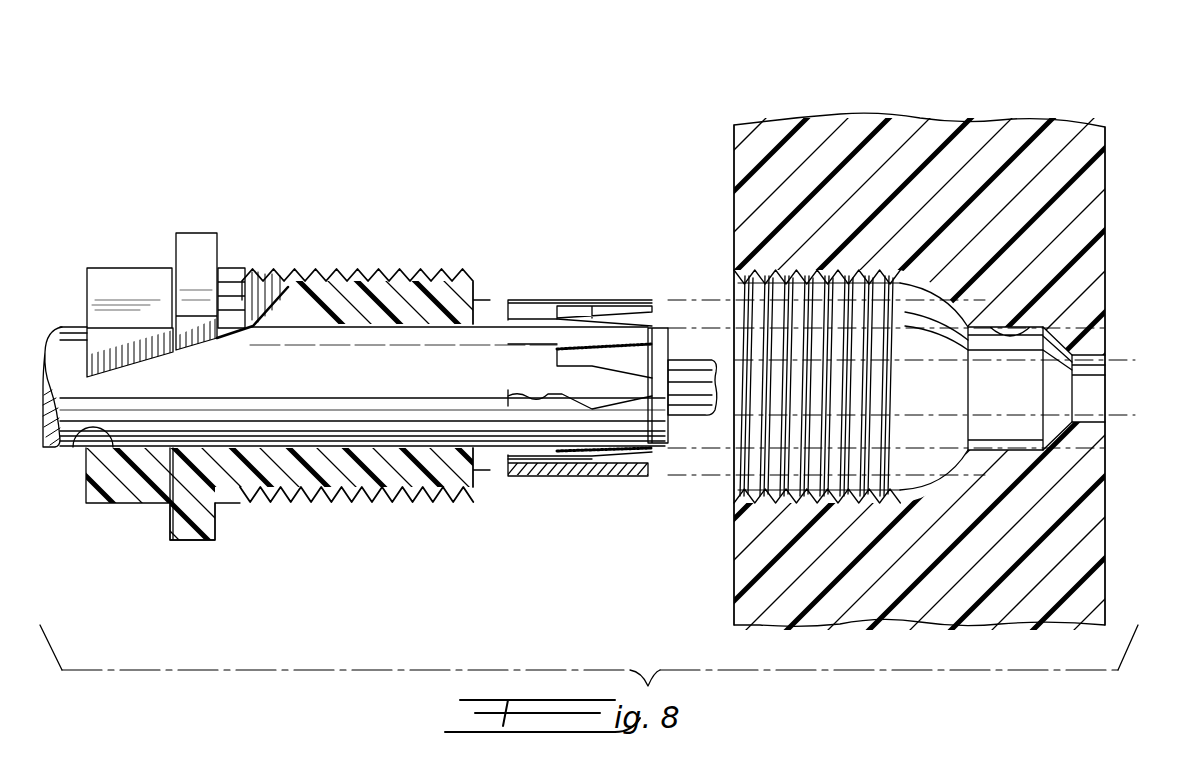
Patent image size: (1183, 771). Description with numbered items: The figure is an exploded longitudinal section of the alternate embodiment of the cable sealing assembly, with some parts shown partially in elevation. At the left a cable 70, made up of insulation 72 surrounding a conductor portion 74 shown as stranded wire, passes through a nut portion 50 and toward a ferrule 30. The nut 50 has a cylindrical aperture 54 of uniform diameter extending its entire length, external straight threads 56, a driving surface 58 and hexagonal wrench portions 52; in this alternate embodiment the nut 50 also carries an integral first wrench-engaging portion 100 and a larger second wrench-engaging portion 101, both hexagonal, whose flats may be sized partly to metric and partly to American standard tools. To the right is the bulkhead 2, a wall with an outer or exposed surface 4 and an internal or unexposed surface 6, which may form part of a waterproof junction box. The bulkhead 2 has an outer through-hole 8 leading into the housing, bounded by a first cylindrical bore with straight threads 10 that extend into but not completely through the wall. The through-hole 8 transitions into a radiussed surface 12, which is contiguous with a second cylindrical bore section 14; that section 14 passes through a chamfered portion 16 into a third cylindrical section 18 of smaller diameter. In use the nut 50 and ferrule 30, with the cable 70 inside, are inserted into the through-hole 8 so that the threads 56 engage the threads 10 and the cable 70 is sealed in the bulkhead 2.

The bulkhead 2 is at (840, 98).
The outer or exposed surface 4 is at (734, 176).
The internal or unexposed surface 6 is at (1105, 215).
The through-hole 8 is at (735, 285).
The straight threads 10 is at (740, 298).
The radiussed surface 12 is at (925, 305).
The second cylindrical bore section 14 is at (1045, 328).
The chamfered portion 16 is at (1062, 358).
The third cylindrical section 18 is at (1085, 410).
The ferrule 30 is at (580, 298).
The nut portion 50 is at (285, 238).
The hexagonal wrench portions 52 is at (162, 528).
The cylindrical aperture 54 is at (90, 448).
The straight threads 56 is at (345, 272).
The driving surface 58 is at (478, 293).
The cable 70 is at (60, 327).
The insulation 72 is at (488, 420).
The conductor portion 74 is at (685, 418).
The first wrench-engaging portion 100 is at (108, 268).
The second wrench-engaging portion 101 is at (195, 232).